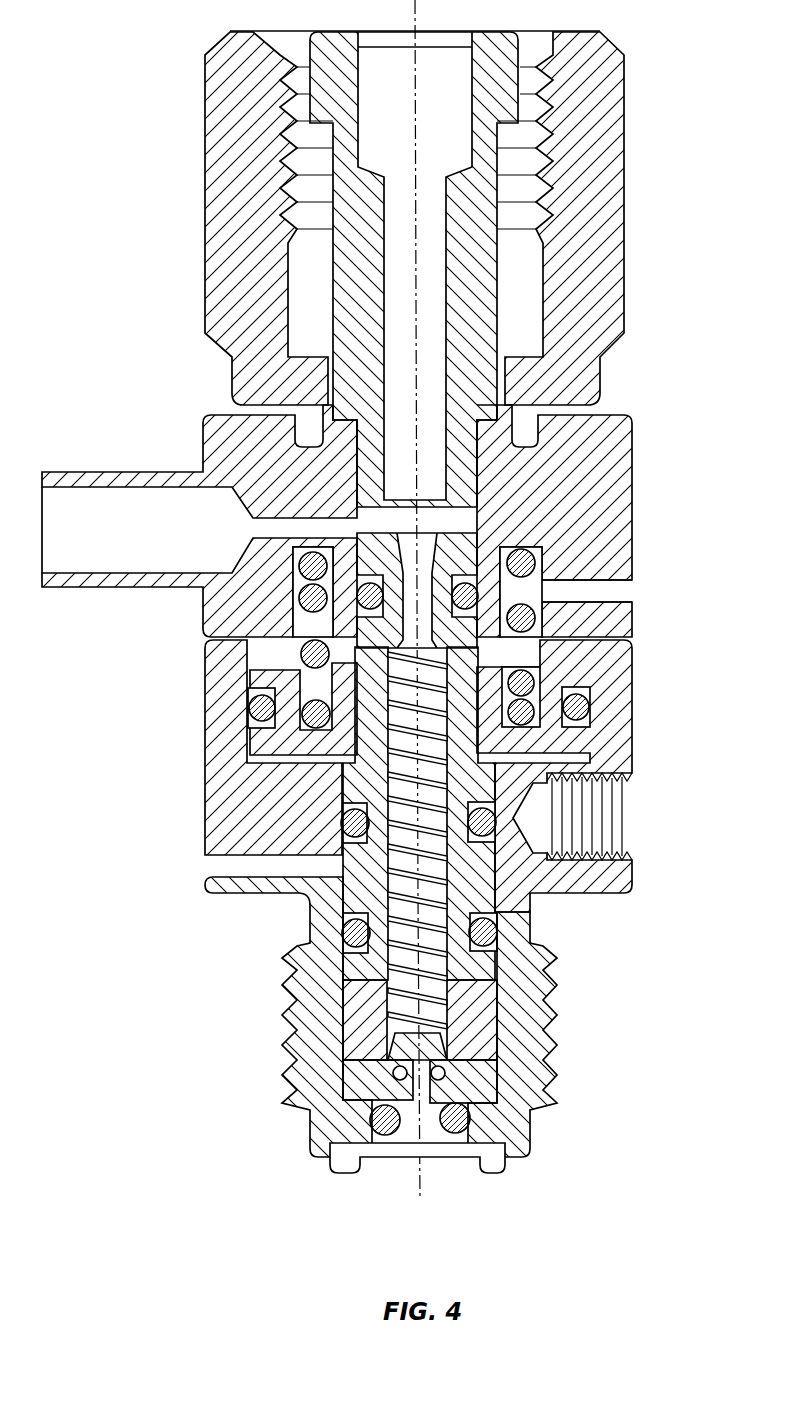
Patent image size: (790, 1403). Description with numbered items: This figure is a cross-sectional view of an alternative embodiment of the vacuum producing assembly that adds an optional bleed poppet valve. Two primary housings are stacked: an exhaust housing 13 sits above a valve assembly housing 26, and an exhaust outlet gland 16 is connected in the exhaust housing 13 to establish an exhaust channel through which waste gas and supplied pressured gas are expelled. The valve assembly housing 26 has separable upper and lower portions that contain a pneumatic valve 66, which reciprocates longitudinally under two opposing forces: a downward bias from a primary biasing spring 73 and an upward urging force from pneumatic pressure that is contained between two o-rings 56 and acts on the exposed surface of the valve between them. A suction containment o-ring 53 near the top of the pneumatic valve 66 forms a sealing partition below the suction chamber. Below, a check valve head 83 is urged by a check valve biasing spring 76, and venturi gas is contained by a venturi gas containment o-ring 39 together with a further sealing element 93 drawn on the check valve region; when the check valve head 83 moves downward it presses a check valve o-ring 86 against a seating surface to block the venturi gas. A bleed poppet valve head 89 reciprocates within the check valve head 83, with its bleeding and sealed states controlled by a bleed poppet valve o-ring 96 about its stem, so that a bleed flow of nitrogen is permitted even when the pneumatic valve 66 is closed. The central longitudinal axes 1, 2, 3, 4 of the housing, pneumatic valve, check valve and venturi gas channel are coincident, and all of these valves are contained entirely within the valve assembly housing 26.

The central longitudinal axis 1 is at (422, 1198).
The central longitudinal axis 2 is at (416, 450).
The central longitudinal axis 3 is at (417, 750).
The central longitudinal axis 4 is at (419, 1050).
The exhaust housing 13 is at (605, 93).
The exhaust outlet gland 16 is at (477, 305).
The valve assembly housing 26 is at (537, 487).
The primary biasing spring 73 is at (540, 547).
The suction containment o-ring 53 is at (543, 592).
The check valve biasing spring 76 is at (580, 607).
The o-rings 56 is at (440, 657).
The pneumatic valve 66 is at (463, 743).
The venturi gas containment o-ring 39 is at (492, 933).
The O-ring seal 93 is at (377, 990).
The check valve head 83 is at (470, 1022).
The bleed poppet valve head 89 is at (387, 1053).
The bleed poppet valve o-ring 96 is at (370, 1097).
The check valve o-ring 86 is at (500, 1160).